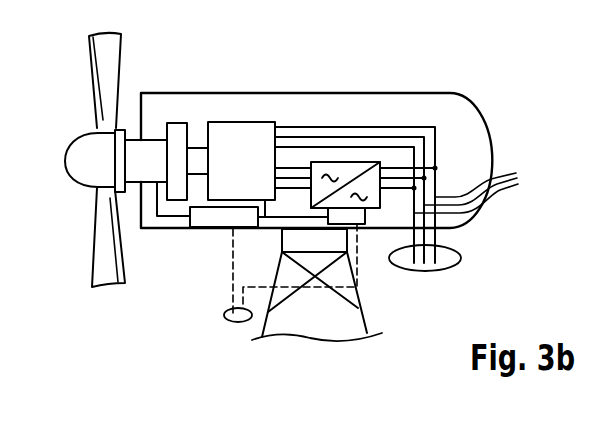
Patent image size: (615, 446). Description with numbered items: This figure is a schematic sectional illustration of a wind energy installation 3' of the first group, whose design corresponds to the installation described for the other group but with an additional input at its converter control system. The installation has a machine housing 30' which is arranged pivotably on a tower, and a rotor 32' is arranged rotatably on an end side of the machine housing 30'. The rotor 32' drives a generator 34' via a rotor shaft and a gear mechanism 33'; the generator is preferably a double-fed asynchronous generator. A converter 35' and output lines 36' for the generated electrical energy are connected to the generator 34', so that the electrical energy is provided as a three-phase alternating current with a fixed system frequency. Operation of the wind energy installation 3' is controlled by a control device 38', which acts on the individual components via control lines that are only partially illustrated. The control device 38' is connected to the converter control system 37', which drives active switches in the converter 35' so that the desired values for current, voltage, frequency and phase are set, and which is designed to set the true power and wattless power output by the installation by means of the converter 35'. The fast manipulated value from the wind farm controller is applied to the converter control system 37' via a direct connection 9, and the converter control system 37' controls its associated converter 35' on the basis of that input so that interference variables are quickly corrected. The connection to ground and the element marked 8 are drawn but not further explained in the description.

The wind energy installation 3' is at (301, 103).
The machine housing 30' is at (316, 121).
The rotor 32' is at (66, 160).
The gear mechanism 33' is at (186, 117).
The generator 34' is at (259, 125).
The converter 35' is at (386, 239).
The output lines 36' is at (414, 199).
The converter control system 37' is at (339, 281).
The control device 38' is at (207, 248).
The ground electrode 8 is at (232, 284).
The direct connection 9 is at (318, 288).